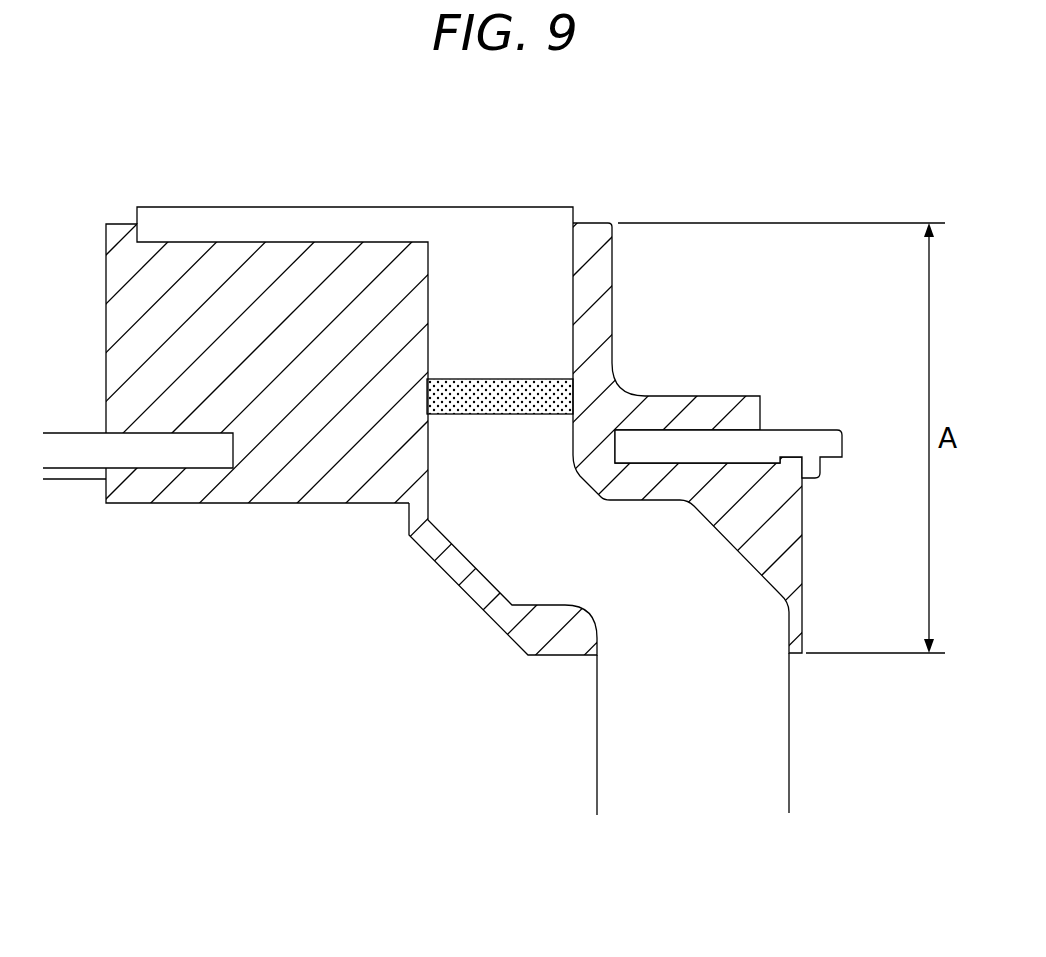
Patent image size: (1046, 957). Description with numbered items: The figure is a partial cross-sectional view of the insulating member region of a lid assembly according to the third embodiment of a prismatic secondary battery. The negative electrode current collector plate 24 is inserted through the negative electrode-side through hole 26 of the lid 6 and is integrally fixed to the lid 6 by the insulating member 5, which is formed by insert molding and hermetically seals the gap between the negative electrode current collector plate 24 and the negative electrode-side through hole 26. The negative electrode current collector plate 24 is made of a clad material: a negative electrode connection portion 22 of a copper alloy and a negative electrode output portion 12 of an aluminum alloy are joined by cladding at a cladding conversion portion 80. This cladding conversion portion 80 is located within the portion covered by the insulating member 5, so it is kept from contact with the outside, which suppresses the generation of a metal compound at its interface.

The insulating member 5 is at (523, 425).
The negative electrode output portion 12 is at (263, 220).
The negative electrode-side through hole 26 is at (268, 463).
The cladding conversion portion 80 is at (513, 393).
The lid 6 is at (793, 440).
The negative electrode connection portion 22 is at (757, 734).
The negative electrode current collector plate 24 is at (803, 777).